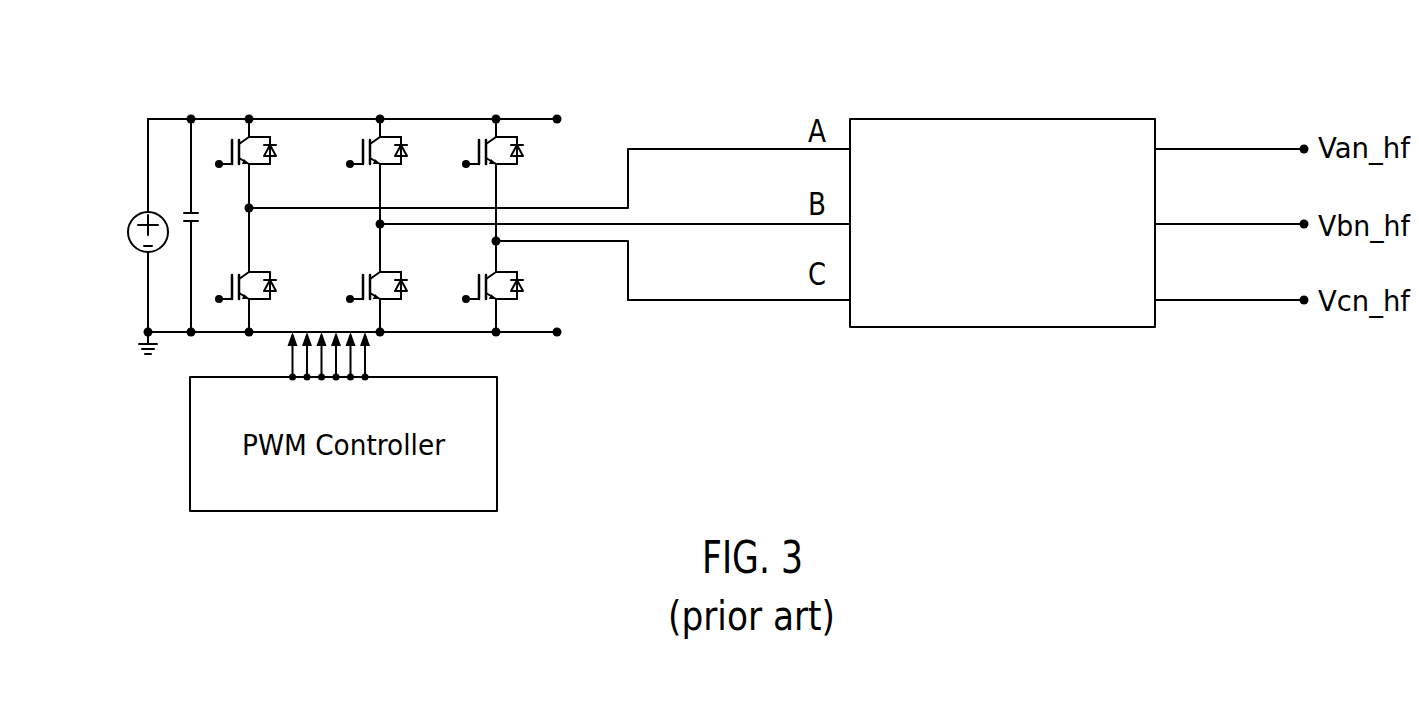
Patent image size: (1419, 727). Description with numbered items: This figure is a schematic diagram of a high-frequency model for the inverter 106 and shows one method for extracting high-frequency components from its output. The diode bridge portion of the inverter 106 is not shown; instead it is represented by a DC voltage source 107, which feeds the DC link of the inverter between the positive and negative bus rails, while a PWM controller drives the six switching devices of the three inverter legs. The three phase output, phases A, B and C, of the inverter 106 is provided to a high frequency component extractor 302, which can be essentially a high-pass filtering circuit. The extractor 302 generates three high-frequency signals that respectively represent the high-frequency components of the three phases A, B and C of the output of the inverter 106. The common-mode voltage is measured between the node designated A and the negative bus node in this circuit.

The inverter 106 is at (380, 201).
The DC voltage source 107 is at (113, 236).
The high frequency component extractor 302 is at (1002, 192).